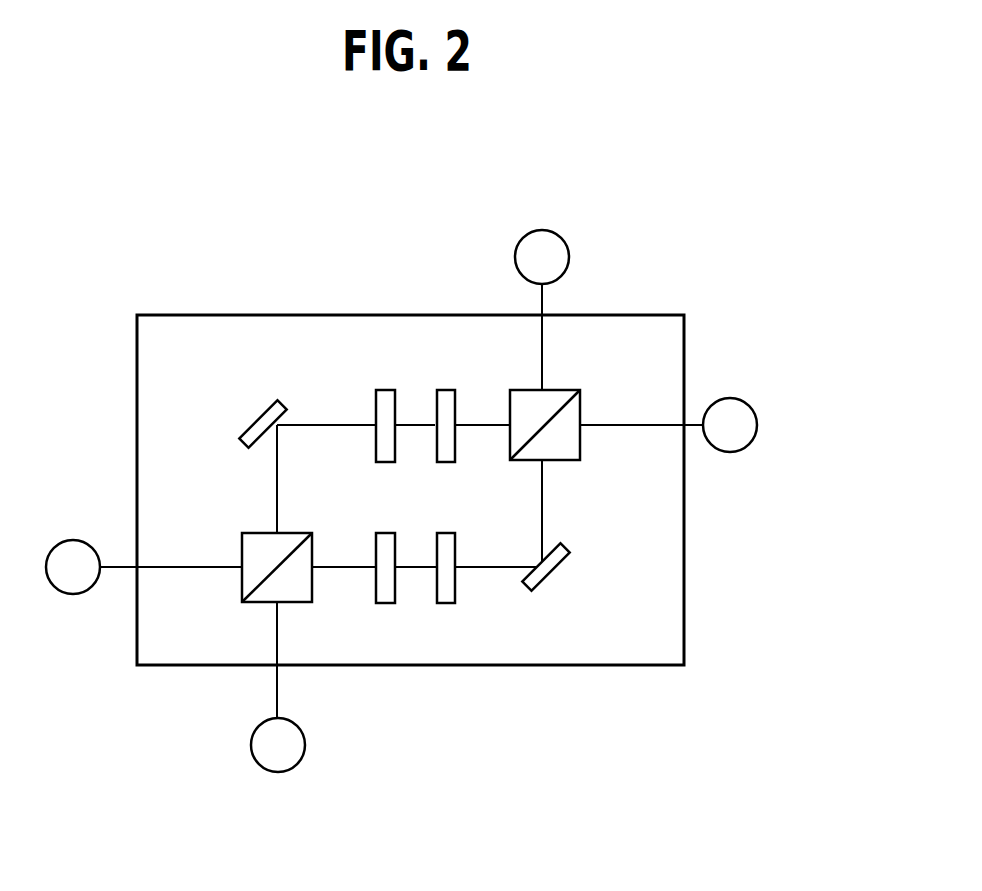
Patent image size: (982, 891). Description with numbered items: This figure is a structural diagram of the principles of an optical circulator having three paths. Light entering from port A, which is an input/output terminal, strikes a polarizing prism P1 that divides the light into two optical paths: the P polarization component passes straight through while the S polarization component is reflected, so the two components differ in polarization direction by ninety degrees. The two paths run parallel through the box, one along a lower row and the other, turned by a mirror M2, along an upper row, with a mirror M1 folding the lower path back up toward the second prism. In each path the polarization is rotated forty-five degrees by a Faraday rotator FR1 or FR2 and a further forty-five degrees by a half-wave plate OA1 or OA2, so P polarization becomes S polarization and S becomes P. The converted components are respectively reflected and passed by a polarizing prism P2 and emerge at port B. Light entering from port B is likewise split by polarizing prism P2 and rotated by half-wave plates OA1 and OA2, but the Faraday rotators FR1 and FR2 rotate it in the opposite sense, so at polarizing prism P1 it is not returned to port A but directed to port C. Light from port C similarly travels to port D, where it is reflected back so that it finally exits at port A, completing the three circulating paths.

The port A is at (73, 567).
The port B is at (730, 425).
The port C is at (278, 745).
The port D is at (542, 257).
The polarizing prism P1 is at (240, 580).
The polarizing prism P2 is at (583, 410).
The Faraday rotator FR1 is at (380, 603).
The Faraday rotator FR2 is at (384, 390).
The half-wave plate OA1 is at (440, 603).
The half-wave plate OA2 is at (446, 390).
The mirror M1 is at (553, 575).
The mirror M2 is at (250, 431).